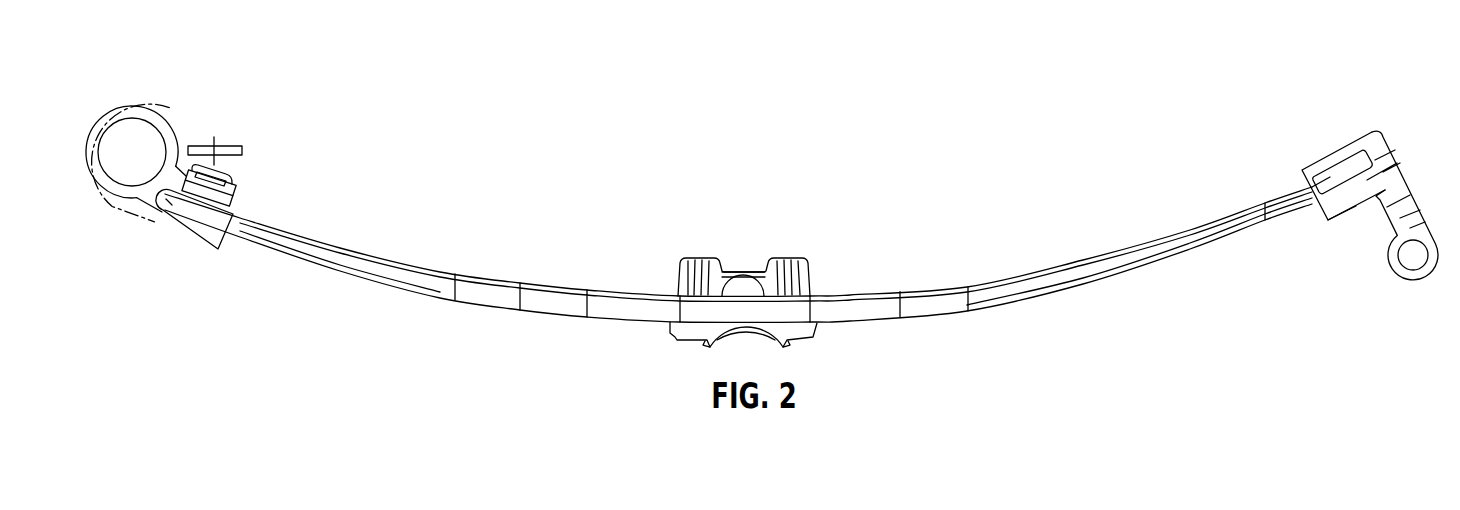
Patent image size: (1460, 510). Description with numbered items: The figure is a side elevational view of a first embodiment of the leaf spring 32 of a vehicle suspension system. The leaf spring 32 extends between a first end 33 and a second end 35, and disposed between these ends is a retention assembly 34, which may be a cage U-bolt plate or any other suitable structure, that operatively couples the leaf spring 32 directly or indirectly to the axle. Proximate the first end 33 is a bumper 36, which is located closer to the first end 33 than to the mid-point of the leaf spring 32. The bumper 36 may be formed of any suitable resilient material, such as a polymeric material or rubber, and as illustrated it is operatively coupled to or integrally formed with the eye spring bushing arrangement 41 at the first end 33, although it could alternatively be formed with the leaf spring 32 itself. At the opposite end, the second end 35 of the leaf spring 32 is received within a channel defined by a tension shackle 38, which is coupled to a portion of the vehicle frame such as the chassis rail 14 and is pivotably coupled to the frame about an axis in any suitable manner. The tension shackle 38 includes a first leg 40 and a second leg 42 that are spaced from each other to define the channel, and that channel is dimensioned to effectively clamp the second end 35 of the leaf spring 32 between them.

The chassis rail 14 is at (215, 140).
The leaf spring 32 is at (503, 278).
The first end 33 is at (160, 203).
The retention assembly 34 is at (773, 262).
The second end 35 is at (1372, 144).
The bumper 36 is at (226, 178).
The tension shackle 38 is at (1390, 252).
The first leg 40 is at (1333, 158).
The eye spring bushing arrangement 41 is at (150, 106).
The second leg 42 is at (1322, 222).